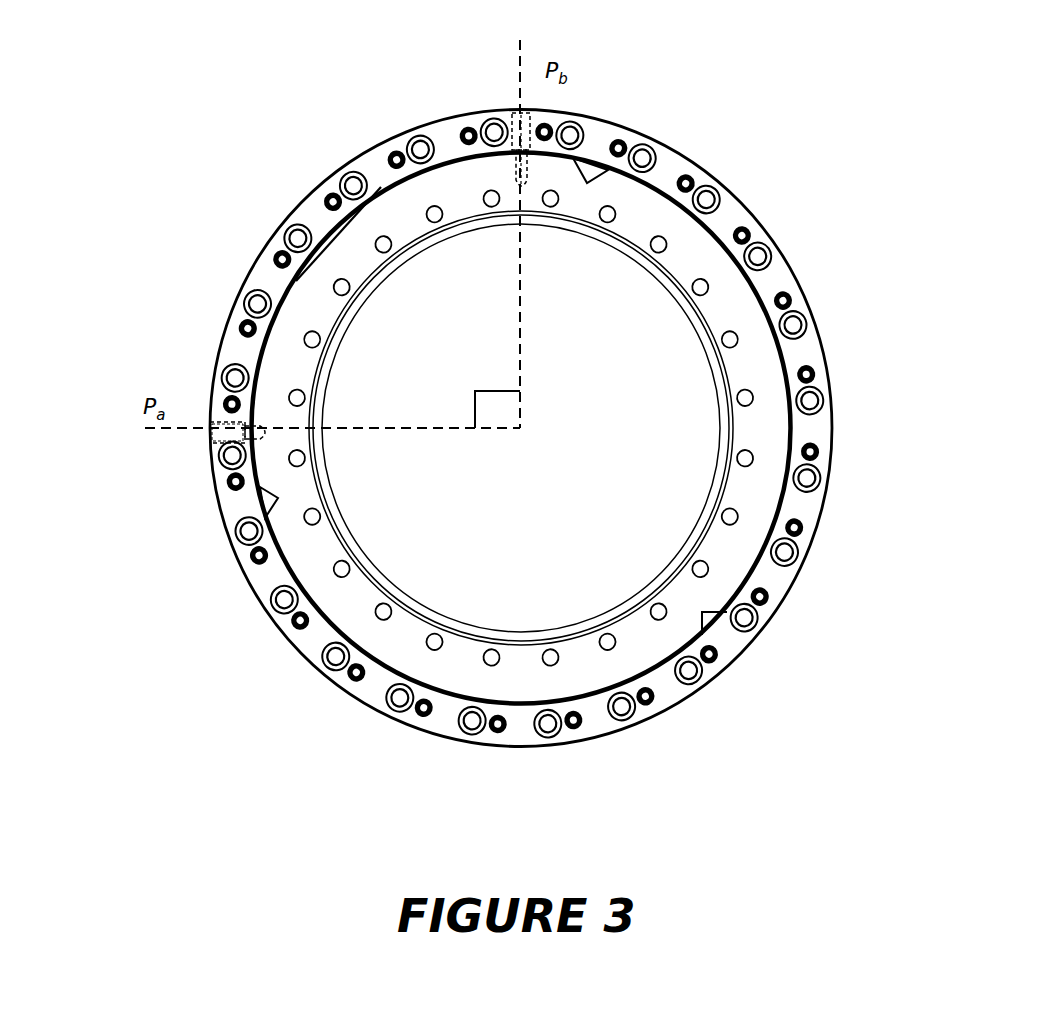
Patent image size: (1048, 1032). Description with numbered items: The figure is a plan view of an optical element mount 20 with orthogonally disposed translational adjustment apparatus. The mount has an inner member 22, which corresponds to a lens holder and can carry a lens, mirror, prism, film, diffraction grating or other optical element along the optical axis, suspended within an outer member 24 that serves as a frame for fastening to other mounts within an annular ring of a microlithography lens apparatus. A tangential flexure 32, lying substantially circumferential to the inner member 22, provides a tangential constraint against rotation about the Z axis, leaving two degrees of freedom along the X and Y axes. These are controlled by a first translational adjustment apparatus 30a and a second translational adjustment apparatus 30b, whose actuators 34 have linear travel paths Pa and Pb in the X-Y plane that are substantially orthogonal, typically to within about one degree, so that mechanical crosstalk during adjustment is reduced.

The optical element mount 20 is at (900, 230).
The inner member 22 is at (746, 320).
The outer member 24 is at (836, 392).
The first translational adjustment apparatus 30a is at (218, 431).
The second translational adjustment apparatus 30b is at (519, 112).
The tangential flexure 32 is at (331, 243).
The actuators 34 is at (240, 428).